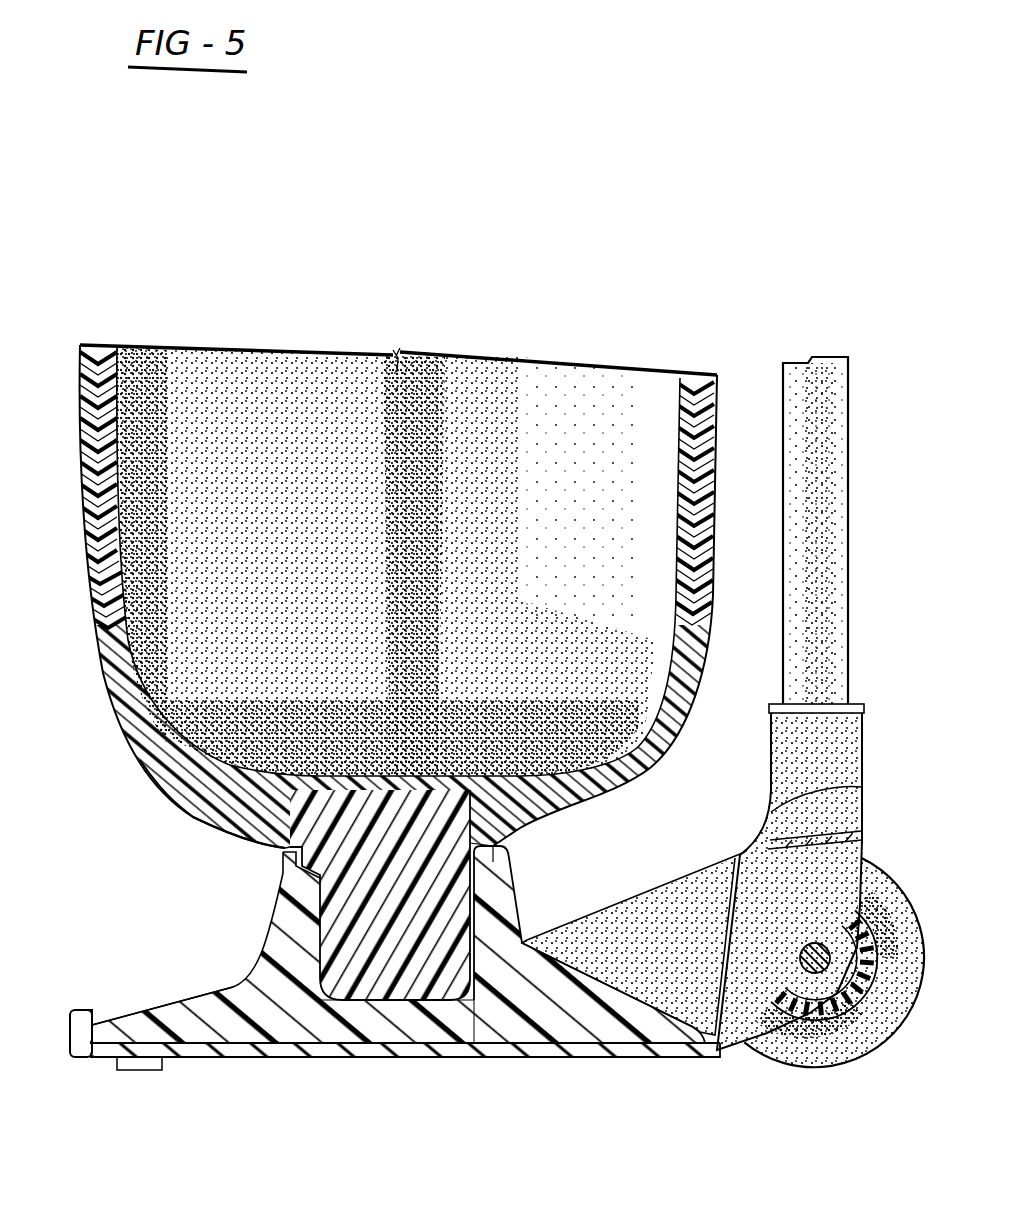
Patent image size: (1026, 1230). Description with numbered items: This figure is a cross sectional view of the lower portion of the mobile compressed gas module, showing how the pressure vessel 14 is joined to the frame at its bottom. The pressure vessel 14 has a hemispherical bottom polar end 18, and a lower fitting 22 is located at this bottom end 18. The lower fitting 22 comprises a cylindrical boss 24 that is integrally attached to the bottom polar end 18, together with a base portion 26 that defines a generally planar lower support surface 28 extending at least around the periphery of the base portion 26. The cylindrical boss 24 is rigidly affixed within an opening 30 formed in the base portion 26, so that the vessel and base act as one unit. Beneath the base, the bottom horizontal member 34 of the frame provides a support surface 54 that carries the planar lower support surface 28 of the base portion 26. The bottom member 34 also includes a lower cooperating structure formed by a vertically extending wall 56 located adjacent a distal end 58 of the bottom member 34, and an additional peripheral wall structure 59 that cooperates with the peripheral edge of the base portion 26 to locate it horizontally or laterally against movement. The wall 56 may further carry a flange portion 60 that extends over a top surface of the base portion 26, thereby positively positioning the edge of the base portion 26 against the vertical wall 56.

The pressure vessel 14 is at (72, 378).
The bottom polar end 18 is at (192, 814).
The lower fitting 22 is at (300, 866).
The cylindrical boss 24 is at (340, 925).
The base portion 26 is at (252, 982).
The lower support surface 28 is at (175, 1045).
The opening 30 is at (410, 1005).
The bottom horizontal member 34 is at (70, 1058).
The support surface 54 is at (500, 990).
The vertically extending wall 56 is at (70, 1040).
The distal end 58 is at (112, 1062).
The peripheral wall structure 59 is at (690, 935).
The flange portion 60 is at (92, 1013).